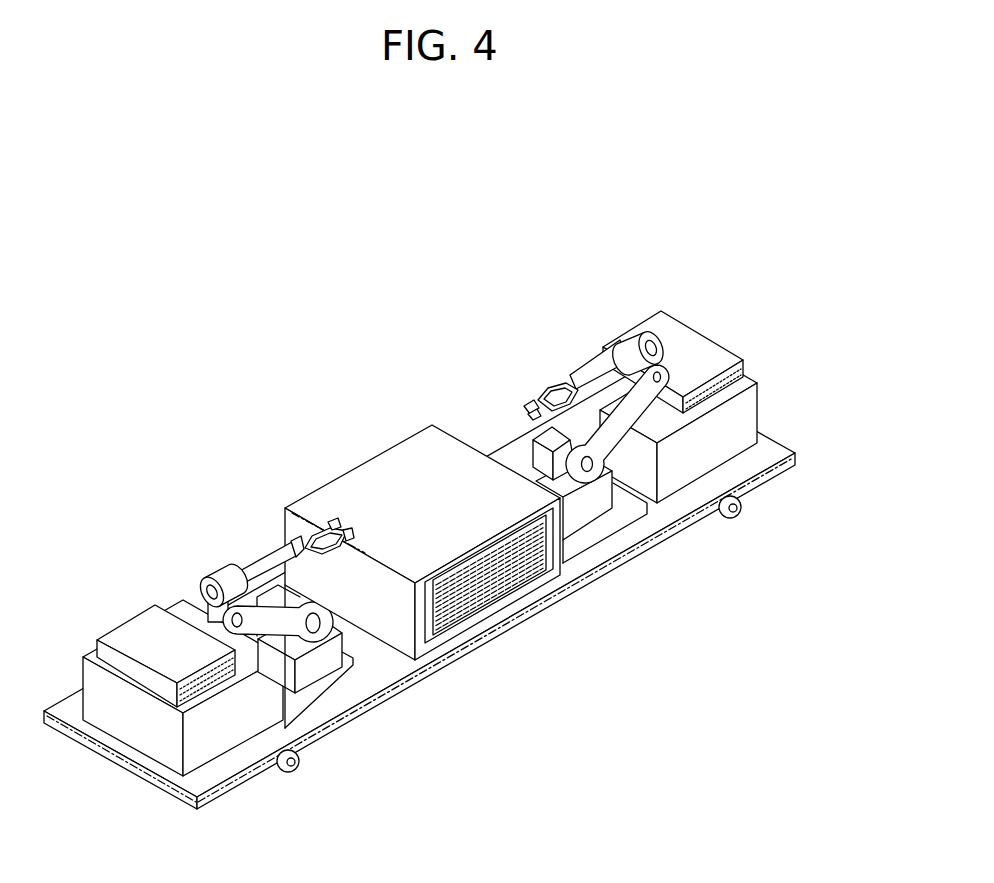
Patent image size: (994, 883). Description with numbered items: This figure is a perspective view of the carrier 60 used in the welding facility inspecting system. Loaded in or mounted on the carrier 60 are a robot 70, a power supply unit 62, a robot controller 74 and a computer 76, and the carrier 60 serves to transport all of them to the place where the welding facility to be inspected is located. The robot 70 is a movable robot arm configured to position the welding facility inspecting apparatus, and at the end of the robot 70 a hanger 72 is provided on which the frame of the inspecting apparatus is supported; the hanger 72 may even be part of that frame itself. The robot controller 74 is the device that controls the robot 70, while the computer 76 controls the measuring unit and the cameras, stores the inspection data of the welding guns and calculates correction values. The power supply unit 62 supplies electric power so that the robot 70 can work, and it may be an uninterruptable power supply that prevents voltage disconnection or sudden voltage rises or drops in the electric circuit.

The carrier 60 is at (375, 675).
The power supply unit 62 is at (393, 467).
The robot 70 is at (623, 350).
The hanger 72 is at (543, 397).
The robot controller 74 is at (737, 420).
The computer 76 is at (695, 347).